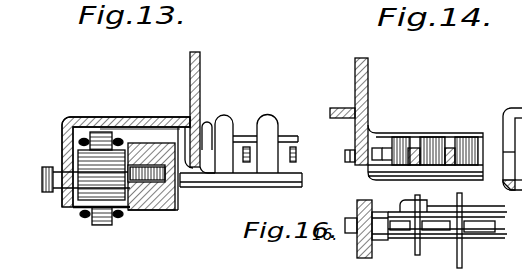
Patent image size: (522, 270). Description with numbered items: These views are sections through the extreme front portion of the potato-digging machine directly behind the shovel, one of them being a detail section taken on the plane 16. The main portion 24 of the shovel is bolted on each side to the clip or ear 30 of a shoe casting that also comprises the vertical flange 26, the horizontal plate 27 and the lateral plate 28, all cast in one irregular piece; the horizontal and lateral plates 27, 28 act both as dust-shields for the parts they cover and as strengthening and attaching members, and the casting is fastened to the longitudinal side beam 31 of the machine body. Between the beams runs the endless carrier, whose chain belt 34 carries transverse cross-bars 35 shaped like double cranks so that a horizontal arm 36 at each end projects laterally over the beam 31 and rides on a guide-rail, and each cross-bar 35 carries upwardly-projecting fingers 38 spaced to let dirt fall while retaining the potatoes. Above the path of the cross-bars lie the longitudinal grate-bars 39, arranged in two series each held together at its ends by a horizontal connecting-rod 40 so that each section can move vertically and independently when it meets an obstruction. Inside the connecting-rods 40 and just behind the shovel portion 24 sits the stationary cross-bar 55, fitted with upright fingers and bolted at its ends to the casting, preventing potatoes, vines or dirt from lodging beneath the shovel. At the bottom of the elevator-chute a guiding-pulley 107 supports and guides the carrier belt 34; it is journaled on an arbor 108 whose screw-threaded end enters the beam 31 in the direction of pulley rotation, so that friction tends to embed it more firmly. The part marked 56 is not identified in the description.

In FIG. 14, the section plane 16 is at (355, 130).
In FIG. 16, the section plane 16 is at (358, 229).
In FIG. 13, the main portion of the shovel 24 is at (283, 141).
In FIG. 14, the main portion of the shovel 24 is at (458, 158).
In FIG. 13, the vertical flange 26 is at (200, 73).
In FIG. 14, the vertical flange 26 is at (368, 87).
In FIG. 13, the horizontal plate 27 is at (122, 120).
In FIG. 14, the horizontal plate 27 is at (340, 114).
In FIG. 13, the lateral plate 28 is at (62, 143).
In FIG. 14, the clip or ear 30 is at (448, 160).
In FIG. 13, the beam 31 is at (172, 209).
In FIG. 13, the endless chain belt 34 is at (86, 180).
In FIG. 13, the transverse cross-bar 35 is at (231, 176).
In FIG. 13, the horizontal arm 36 is at (146, 130).
In FIG. 13, the upwardly-projecting fingers 38 is at (263, 125).
In FIG. 13, the longitudinal grate-bars 39 is at (292, 162).
In FIG. 16, the longitudinal grate-bars 39 is at (420, 252).
In FIG. 16, the horizontal connecting-rod 40 is at (443, 206).
In FIG. 14, the stationary cross-bar 55 is at (398, 165).
In FIG. 16, the collar 56 is at (404, 232).
In FIG. 13, the guiding-pulley 107 is at (133, 210).
In FIG. 13, the arbor 108 is at (58, 192).